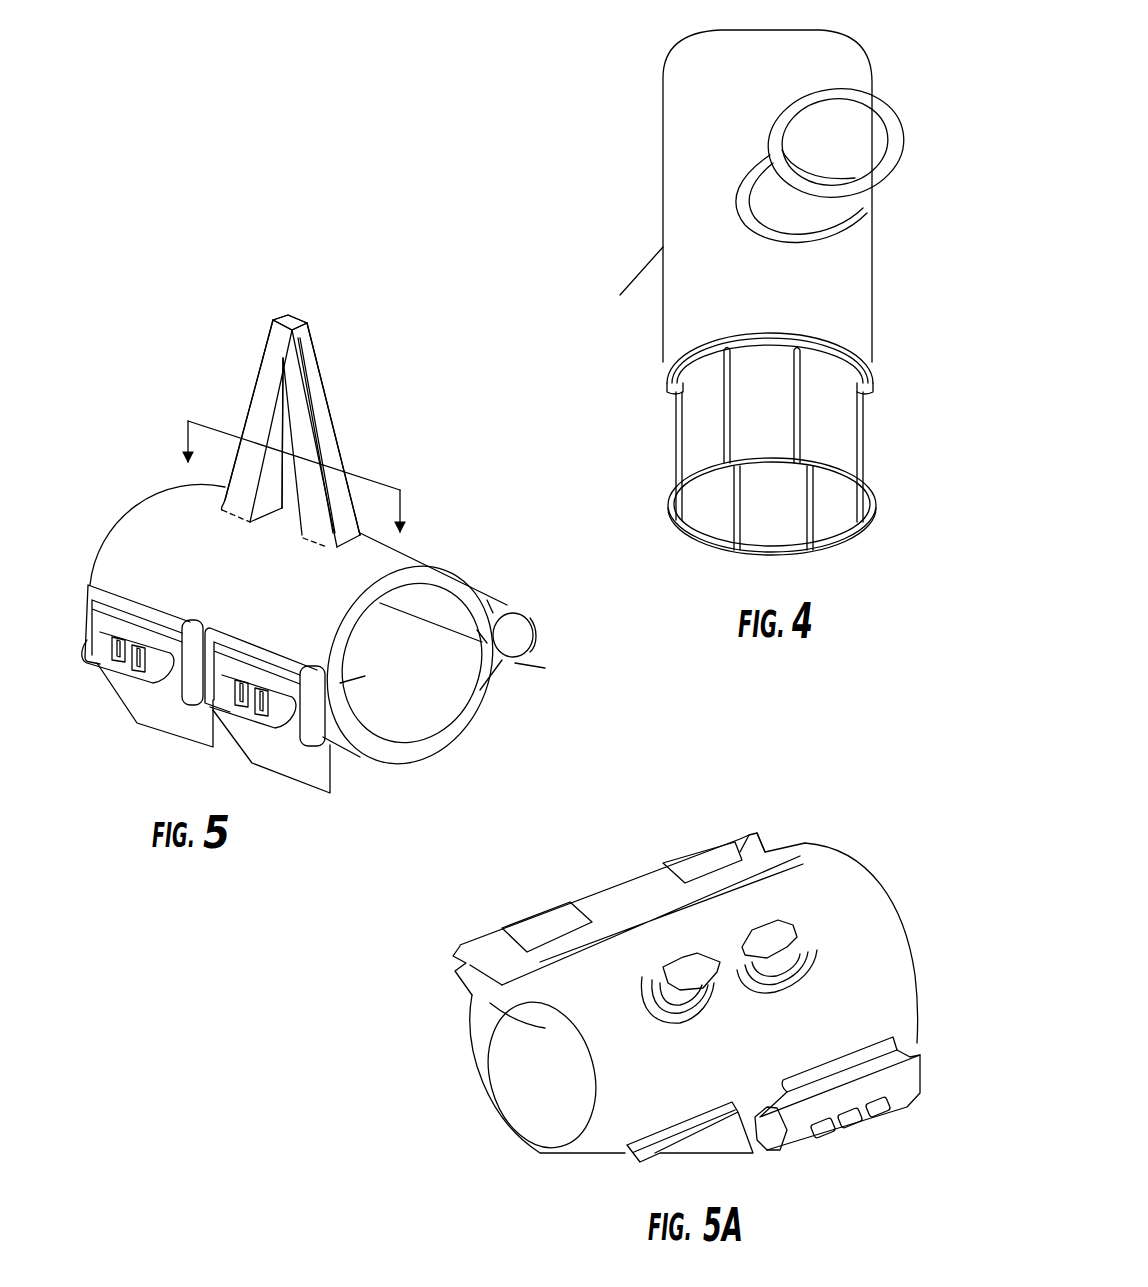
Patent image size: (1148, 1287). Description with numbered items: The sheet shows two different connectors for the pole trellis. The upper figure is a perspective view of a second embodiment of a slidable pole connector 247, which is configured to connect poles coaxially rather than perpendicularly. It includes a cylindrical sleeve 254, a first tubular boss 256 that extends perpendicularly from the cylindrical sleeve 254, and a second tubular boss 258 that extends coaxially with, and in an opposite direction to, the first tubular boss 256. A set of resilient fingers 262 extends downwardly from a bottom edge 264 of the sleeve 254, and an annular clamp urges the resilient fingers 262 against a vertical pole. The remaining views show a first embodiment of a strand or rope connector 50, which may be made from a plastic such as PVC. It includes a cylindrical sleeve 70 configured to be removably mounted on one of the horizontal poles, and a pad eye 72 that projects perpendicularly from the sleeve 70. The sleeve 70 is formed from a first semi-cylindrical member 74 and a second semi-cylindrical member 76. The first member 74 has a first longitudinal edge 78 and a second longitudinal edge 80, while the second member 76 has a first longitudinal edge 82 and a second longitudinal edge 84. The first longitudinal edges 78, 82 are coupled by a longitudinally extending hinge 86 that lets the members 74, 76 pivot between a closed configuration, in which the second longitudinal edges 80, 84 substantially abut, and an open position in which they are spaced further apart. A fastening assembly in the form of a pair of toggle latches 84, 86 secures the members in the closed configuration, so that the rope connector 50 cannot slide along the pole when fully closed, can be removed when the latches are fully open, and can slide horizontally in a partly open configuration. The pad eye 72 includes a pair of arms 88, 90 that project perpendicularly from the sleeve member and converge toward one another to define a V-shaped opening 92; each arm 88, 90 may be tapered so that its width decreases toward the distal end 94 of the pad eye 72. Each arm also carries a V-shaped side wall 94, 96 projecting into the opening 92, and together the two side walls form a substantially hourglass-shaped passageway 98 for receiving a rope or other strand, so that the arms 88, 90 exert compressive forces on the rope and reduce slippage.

In FIG. 4, the slidable pole connector 247 is at (886, 76).
In FIG. 4, the cylindrical sleeve 254 is at (827, 280).
In FIG. 4, the first tubular boss 256 is at (843, 214).
In FIG. 4, the second tubular boss 258 is at (662, 373).
In FIG. 4, the resilient fingers 262 is at (832, 413).
In FIG. 4, the bottom edge 264 is at (870, 367).
In FIG. 5, the rope connector 50 is at (574, 571).
In FIG. 5, the cylindrical sleeve 70 is at (122, 506).
In FIG. 5, the pad eye 72 is at (331, 371).
In FIG. 5, the first semi-cylindrical member 74 is at (413, 577).
In FIG. 5, the second semi-cylindrical member 76 is at (463, 717).
In FIG. 5, the first longitudinal edge 78 is at (503, 662).
In FIG. 5, the second longitudinal edge 80 is at (328, 688).
In FIG. 5, the first longitudinal edge 82 is at (518, 616).
In FIG. 5, the second longitudinal edge 84 is at (340, 683).
In FIG. 5, the hinge 86 is at (533, 640).
In FIG. 5, the arm 88 is at (338, 433).
In FIG. 5A, the arm 88 is at (677, 973).
In FIG. 5, the arm 90 is at (252, 400).
In FIG. 5A, the arm 90 is at (793, 928).
In FIG. 5, the V-shaped opening 92 is at (285, 493).
In FIG. 5, the distal end 94 is at (292, 315).
In FIG. 5A, the distal end 94 is at (743, 935).
In FIG. 5A, the V-shaped side wall 96 is at (705, 952).
In FIG. 5A, the hourglass-shaped passageway 98 is at (735, 957).